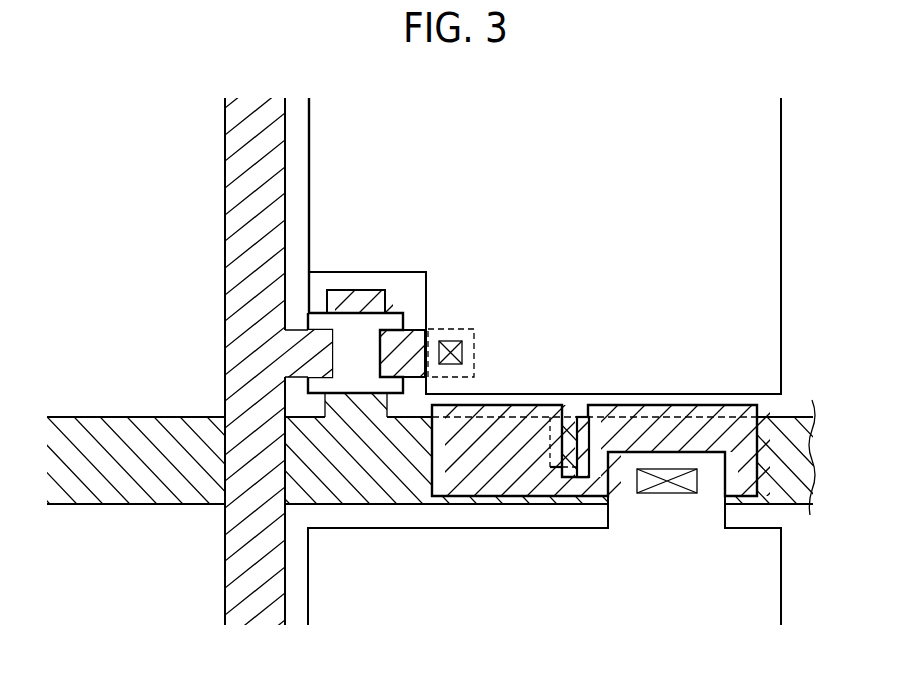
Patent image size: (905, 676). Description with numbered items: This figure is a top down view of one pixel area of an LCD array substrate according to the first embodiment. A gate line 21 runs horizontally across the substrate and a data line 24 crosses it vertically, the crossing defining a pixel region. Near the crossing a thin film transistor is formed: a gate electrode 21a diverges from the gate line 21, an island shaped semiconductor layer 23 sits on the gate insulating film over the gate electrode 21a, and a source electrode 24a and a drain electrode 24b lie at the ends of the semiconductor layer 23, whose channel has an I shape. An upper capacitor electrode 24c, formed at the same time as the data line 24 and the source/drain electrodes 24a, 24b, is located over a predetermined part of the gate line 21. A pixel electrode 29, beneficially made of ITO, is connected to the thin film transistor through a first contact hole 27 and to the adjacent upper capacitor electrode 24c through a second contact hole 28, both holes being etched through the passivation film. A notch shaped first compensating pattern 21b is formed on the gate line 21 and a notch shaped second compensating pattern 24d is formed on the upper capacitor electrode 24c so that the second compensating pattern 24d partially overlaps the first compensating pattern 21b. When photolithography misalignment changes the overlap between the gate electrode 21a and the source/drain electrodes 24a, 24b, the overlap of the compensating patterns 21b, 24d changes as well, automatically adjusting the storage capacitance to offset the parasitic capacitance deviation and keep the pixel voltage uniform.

The gate line 21 is at (788, 425).
The gate electrode 21a is at (375, 290).
The first compensating pattern 21b is at (573, 455).
The semiconductor layer 23 is at (362, 385).
The data line 24 is at (233, 254).
The source electrode 24a is at (303, 352).
The drain electrode 24b is at (413, 338).
The upper capacitor electrode 24c is at (692, 408).
The second compensating pattern 24d is at (570, 465).
The first contact hole 27 is at (462, 352).
The second contact hole 28 is at (672, 493).
The pixel electrode 29 is at (773, 217).